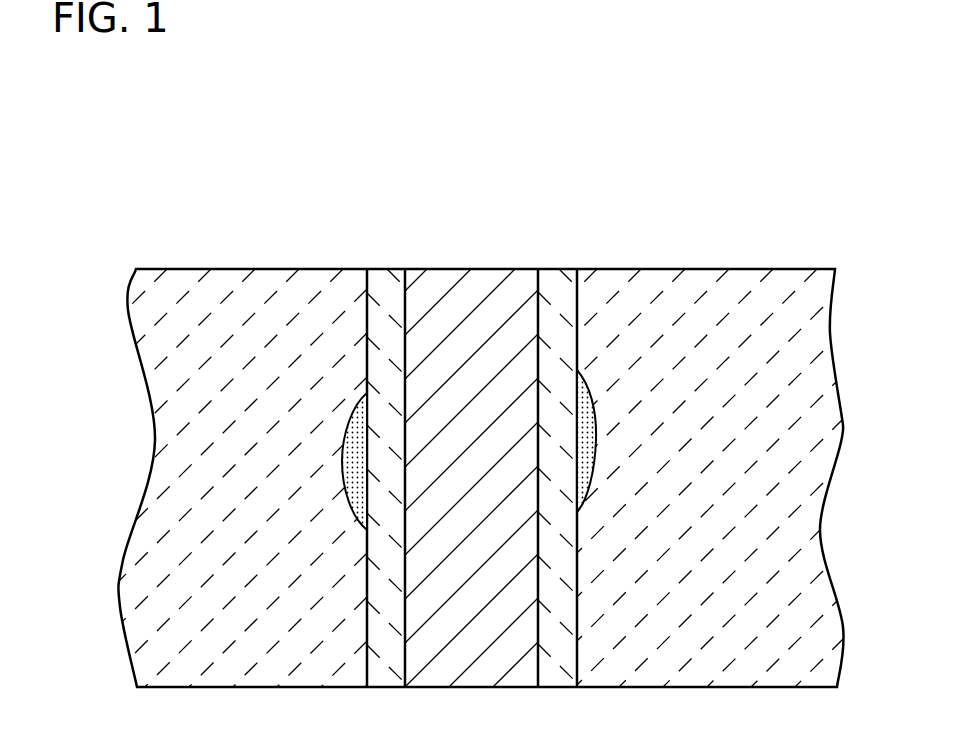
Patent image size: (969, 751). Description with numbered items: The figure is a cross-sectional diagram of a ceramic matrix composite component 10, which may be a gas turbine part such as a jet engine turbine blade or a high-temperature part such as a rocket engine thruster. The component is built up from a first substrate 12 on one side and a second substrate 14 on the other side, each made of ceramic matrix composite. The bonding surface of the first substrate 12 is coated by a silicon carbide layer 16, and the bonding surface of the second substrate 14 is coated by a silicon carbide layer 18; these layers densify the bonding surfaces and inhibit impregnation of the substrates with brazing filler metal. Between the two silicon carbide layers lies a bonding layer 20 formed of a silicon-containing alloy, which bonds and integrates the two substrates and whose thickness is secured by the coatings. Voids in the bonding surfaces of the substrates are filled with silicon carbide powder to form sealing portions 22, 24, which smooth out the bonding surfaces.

The ceramic matrix composite component 10 is at (250, 122).
The first substrate 12 is at (252, 269).
The second substrate 14 is at (717, 269).
The silicon carbide layer 16 is at (383, 269).
The silicon carbide layer 18 is at (560, 269).
The bonding layer 20 is at (478, 269).
The sealing portion 22 is at (345, 435).
The sealing portion 24 is at (597, 433).